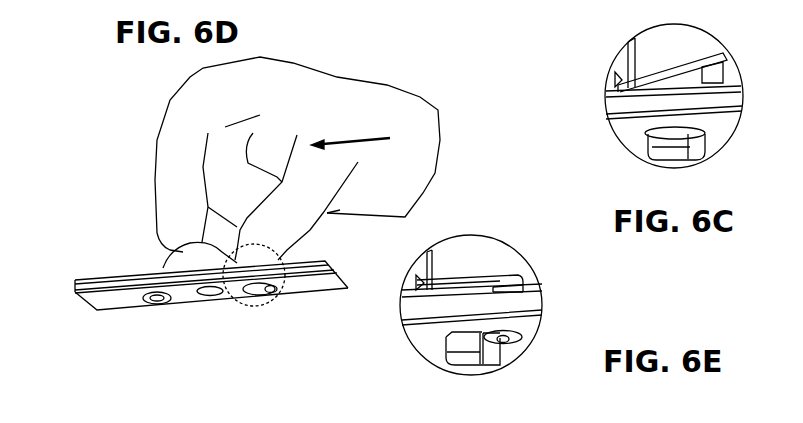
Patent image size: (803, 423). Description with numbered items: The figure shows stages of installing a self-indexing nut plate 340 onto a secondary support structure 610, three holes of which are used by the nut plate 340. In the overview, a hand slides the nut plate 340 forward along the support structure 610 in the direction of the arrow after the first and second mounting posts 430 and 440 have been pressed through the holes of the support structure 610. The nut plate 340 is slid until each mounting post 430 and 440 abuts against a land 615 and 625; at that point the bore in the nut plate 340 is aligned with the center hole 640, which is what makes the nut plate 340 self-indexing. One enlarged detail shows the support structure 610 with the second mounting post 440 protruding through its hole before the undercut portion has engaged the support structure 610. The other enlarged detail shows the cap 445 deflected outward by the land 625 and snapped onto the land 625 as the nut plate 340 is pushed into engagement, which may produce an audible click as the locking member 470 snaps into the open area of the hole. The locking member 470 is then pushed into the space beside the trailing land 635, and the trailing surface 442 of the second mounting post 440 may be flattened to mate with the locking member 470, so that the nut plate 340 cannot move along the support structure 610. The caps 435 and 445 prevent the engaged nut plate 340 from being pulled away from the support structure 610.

In FIG. 6D, the nut plate 340 is at (166, 267).
In FIG. 6D, the land 615 is at (132, 302).
In FIG. 6D, the first mounting post 430 is at (157, 300).
In FIG. 6D, the center hole 640 is at (208, 295).
In FIG. 6D, the second mounting post 440 is at (260, 285).
In FIG. 6C, the second mounting post 440 is at (688, 143).
In FIG. 6D, the trailing land 635 is at (274, 291).
In FIG. 6E, the trailing land 635 is at (523, 338).
In FIG. 6D, the land 625 is at (233, 293).
In FIG. 6E, the land 625 is at (418, 350).
In FIG. 6C, the secondary support structure 610 is at (613, 128).
In FIG. 6C, the cap 435 is at (452, 0).
In FIG. 6E, the cap 445 is at (452, 367).
In FIG. 6E, the trailing surface 442 is at (494, 348).
In FIG. 6E, the locking member 470 is at (500, 343).